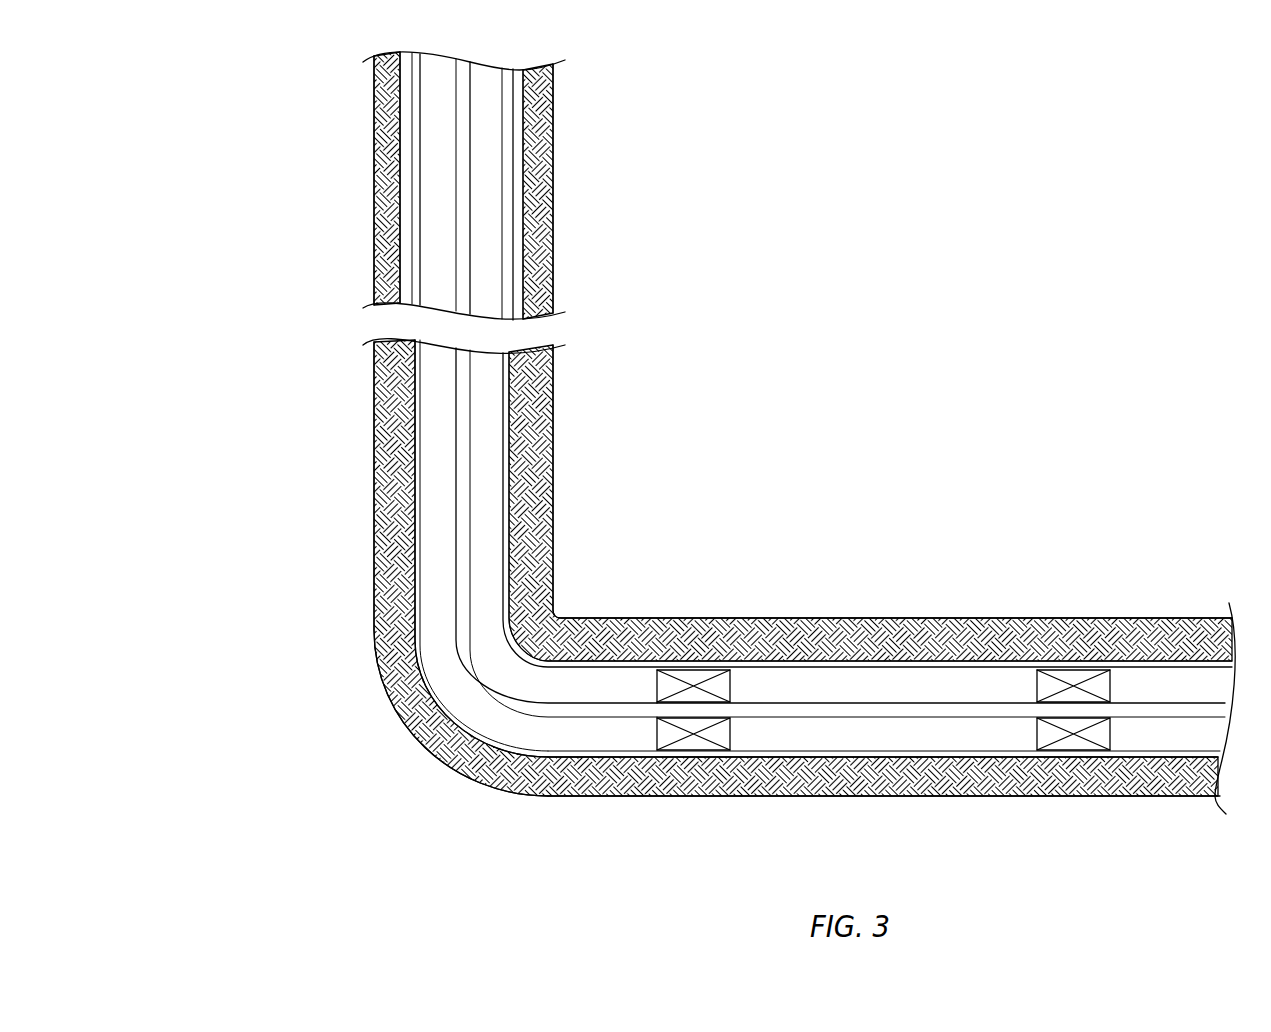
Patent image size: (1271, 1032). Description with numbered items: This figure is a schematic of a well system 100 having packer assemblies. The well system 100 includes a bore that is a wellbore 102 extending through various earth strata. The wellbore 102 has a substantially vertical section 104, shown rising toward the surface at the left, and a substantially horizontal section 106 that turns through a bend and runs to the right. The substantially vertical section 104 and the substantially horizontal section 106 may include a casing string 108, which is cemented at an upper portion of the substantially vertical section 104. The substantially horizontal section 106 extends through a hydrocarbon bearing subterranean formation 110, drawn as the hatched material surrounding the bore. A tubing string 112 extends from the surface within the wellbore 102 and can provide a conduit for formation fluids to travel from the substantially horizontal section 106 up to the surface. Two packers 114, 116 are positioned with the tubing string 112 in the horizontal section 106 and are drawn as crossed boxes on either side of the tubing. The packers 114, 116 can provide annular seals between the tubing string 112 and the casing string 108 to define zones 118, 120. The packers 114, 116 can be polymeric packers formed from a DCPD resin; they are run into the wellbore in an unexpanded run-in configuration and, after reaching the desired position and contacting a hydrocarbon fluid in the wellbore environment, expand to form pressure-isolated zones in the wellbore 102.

The well system 100 is at (236, 83).
The wellbore 102 is at (489, 78).
The substantially vertical section 104 is at (560, 382).
The substantially horizontal section 106 is at (588, 792).
The casing string 108 is at (400, 137).
The hydrocarbon bearing subterranean formation 110 is at (387, 458).
The tubing string 112 is at (470, 540).
The packer 114 is at (692, 743).
The packer 116 is at (1080, 743).
The zone 118 is at (885, 683).
The zone 120 is at (1138, 687).